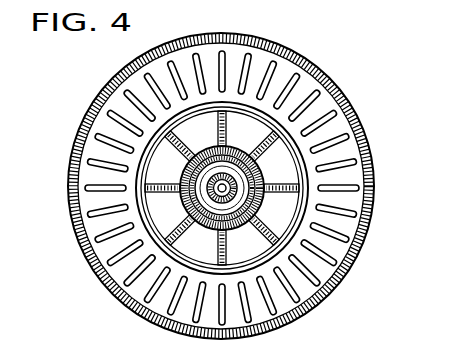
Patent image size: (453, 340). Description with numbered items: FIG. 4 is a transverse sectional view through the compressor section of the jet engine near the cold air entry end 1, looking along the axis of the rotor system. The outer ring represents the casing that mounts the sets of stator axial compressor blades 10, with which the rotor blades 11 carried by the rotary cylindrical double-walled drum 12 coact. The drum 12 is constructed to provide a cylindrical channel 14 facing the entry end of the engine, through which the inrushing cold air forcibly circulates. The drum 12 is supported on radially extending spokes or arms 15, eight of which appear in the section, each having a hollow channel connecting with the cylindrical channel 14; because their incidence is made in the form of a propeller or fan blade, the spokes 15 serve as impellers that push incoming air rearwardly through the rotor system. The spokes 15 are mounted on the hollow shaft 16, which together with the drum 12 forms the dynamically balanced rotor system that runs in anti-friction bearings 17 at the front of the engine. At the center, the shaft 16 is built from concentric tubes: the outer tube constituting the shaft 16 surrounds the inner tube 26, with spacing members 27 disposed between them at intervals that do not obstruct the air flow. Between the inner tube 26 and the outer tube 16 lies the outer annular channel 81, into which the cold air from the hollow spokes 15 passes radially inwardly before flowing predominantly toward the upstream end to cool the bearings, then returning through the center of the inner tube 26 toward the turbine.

The cold air entry end 1 is at (223, 182).
The stator axial compressor blades 10 is at (288, 58).
The rotor blades 11 is at (346, 151).
The double-walled drum 12 is at (182, 117).
The cylindrical channel 14 is at (143, 164).
The spokes 15 is at (173, 233).
The hollow shaft 16 is at (238, 147).
The anti-friction bearings 17 is at (212, 233).
The inner tube 26 is at (254, 202).
The spacing members 27 is at (298, 122).
The outer annular channel 81 is at (232, 188).